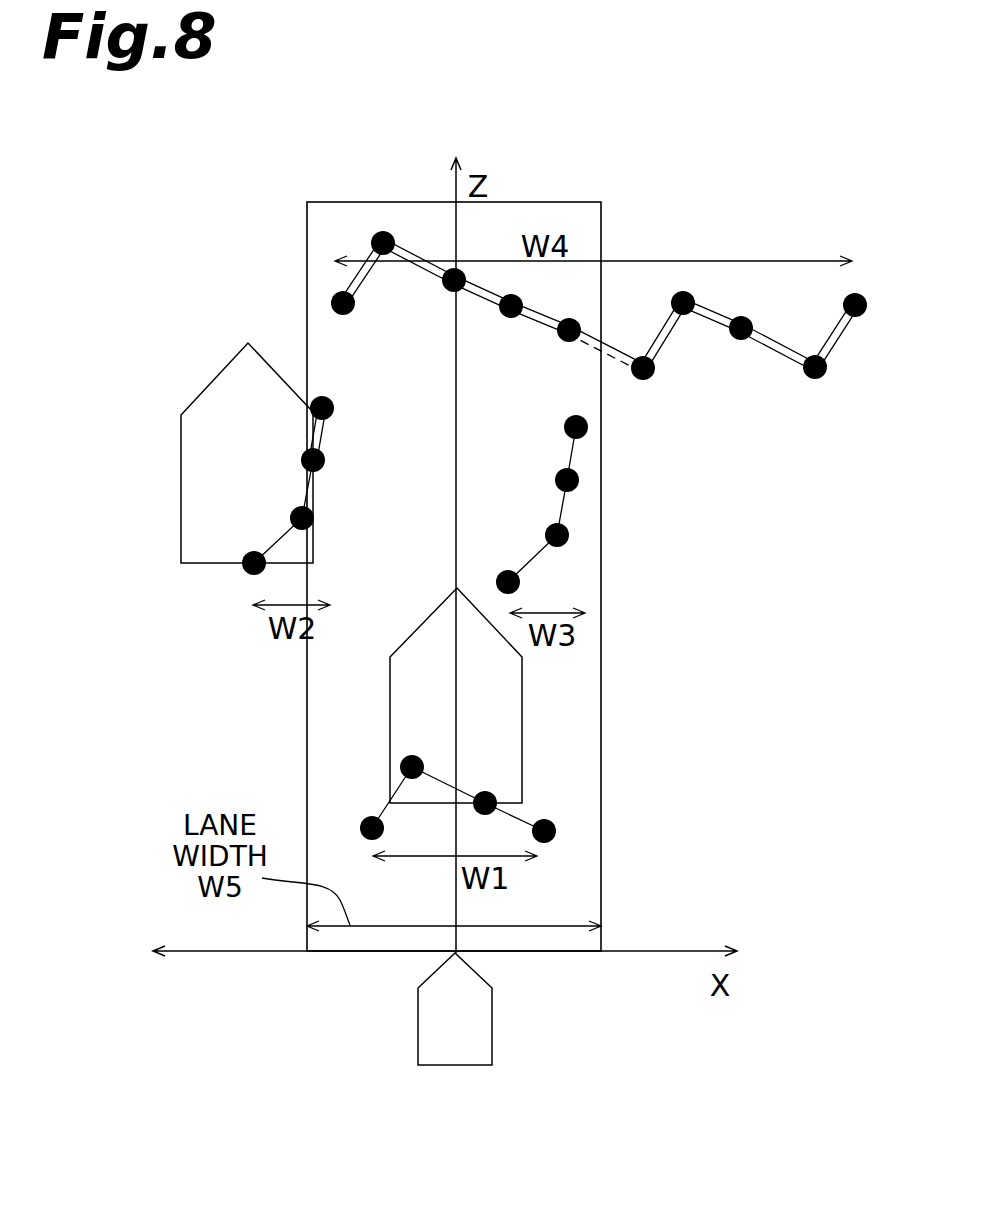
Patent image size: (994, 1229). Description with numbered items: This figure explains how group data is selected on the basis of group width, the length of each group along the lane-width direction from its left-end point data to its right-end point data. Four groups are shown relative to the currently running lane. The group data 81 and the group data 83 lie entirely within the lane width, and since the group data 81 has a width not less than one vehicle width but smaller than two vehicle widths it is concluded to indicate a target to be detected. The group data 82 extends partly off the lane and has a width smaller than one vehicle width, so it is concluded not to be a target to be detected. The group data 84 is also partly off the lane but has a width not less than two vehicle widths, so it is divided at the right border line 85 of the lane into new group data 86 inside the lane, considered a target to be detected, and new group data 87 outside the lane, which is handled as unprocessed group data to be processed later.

The group data 81 is at (438, 778).
The group data 82 is at (320, 432).
The group data 83 is at (565, 503).
The group data 84 is at (535, 304).
The right border line 85 is at (601, 808).
The group data 86 is at (478, 300).
The group data 87 is at (770, 354).